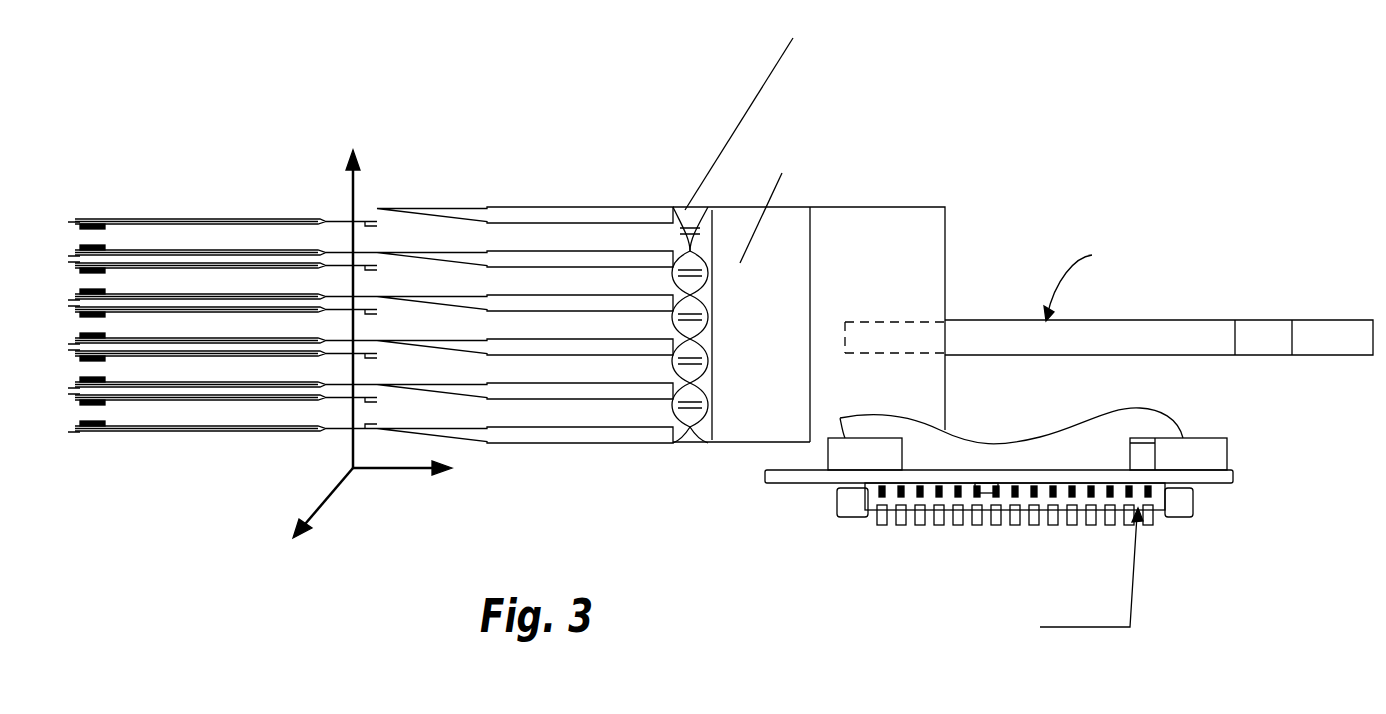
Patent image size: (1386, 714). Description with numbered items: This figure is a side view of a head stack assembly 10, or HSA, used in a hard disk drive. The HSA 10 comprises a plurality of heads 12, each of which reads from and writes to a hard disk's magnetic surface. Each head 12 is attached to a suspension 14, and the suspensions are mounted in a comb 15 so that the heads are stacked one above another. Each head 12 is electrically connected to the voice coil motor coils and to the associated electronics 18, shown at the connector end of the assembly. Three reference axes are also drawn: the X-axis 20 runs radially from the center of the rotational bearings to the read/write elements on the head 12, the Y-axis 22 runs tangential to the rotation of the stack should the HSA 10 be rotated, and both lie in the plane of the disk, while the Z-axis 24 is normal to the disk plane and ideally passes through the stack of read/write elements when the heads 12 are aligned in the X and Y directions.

The head stack assembly 10 is at (312, 58).
The head 12 is at (108, 270).
The suspension 14 is at (168, 213).
The comb 15 is at (516, 207).
The electronics 18 is at (913, 533).
The X-axis 20 is at (410, 470).
The Y-axis 22 is at (325, 490).
The Z-axis 24 is at (357, 200).